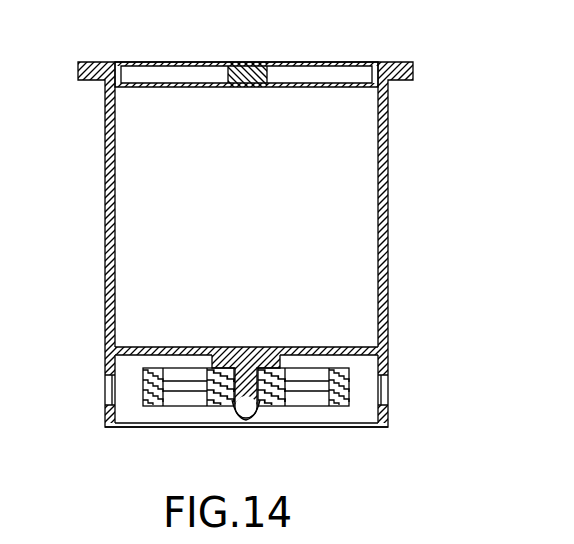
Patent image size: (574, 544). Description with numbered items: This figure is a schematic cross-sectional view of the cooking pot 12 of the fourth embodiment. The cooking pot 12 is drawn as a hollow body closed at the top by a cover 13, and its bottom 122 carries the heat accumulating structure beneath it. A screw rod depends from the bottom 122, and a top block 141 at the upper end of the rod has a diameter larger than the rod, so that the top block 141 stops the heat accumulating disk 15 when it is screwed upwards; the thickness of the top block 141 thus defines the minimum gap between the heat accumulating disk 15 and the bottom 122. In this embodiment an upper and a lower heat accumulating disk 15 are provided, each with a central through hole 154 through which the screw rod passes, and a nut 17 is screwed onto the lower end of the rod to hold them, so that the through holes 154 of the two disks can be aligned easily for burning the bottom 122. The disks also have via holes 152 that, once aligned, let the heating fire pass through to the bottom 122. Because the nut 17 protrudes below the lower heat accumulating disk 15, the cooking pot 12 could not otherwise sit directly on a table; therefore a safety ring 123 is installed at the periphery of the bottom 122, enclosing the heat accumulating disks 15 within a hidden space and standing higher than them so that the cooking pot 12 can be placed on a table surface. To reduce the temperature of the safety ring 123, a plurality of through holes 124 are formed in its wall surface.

The cooking pot 12 is at (388, 240).
The cover 13 is at (330, 84).
The bottom 122 is at (345, 352).
The safety ring 123 is at (388, 412).
The through hole 124 is at (388, 384).
The top block 141 is at (233, 357).
The heat accumulating disk 15 is at (143, 375).
The via hole 152 is at (180, 376).
The central through hole 154 is at (221, 400).
The nut 17 is at (249, 421).